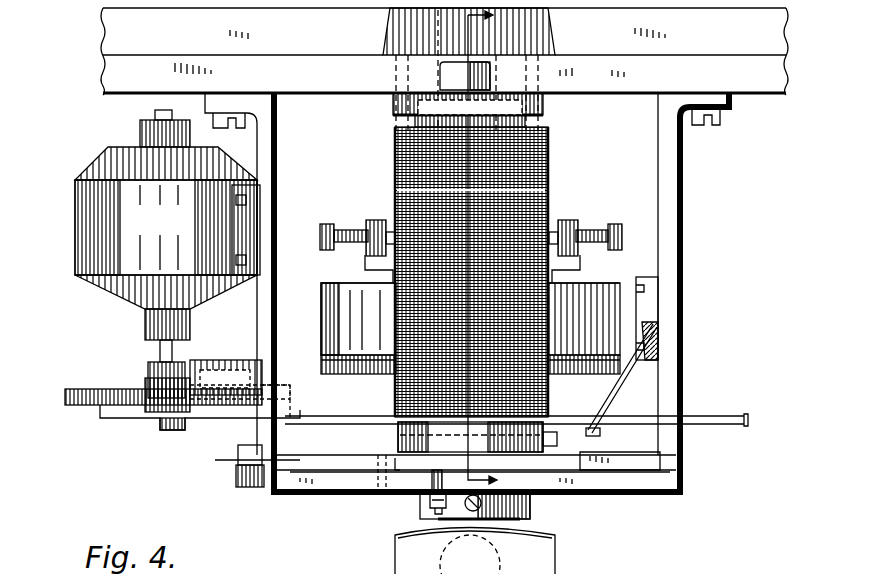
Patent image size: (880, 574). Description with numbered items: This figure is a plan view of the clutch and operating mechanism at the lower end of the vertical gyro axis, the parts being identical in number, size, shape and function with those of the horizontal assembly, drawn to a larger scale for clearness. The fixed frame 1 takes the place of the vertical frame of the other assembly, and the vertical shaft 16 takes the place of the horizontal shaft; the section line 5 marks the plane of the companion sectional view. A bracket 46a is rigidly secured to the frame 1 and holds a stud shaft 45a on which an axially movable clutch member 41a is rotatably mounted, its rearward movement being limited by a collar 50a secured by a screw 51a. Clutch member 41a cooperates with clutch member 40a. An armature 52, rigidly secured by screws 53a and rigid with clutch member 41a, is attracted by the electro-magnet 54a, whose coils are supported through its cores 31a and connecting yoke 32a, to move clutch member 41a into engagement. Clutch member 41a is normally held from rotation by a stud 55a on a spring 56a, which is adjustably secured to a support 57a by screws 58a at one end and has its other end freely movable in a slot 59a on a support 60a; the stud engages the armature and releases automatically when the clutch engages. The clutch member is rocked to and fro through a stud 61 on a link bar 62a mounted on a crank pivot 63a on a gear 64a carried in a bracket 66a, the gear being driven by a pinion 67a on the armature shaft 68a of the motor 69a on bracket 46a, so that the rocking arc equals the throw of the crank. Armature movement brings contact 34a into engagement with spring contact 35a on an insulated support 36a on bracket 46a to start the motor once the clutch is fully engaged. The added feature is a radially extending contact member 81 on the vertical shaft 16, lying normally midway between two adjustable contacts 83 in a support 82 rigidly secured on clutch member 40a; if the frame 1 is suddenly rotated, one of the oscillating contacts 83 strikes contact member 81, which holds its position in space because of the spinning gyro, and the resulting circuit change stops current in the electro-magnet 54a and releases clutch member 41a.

The fixed frame 1 is at (118, 79).
The vertical shaft 16 is at (440, 10).
The section line 5 is at (467, 249).
The connecting yoke 32a is at (395, 106).
The cores 31a is at (415, 123).
The contact member 81 is at (545, 152).
The electro-magnet 54a is at (397, 192).
The bracket 46a is at (683, 198).
The motor 69a is at (167, 236).
The armature shaft 68a is at (160, 357).
The bracket 66a is at (205, 360).
The gear 64a is at (109, 408).
The pinion 67a is at (150, 424).
The crank pivot 63a is at (200, 430).
The link bar 62a is at (310, 418).
The slot 59a is at (238, 462).
The support 60a is at (248, 488).
The clutch member 40a is at (330, 324).
The axially movable clutch member 41a is at (322, 372).
The adjustable contacts 83 is at (328, 226).
The support 82 is at (374, 222).
The insulated support 36a is at (678, 318).
The spring contact 35a is at (662, 347).
The contact 34a is at (603, 430).
The spring 56a is at (286, 460).
The stud 61 is at (398, 432).
The collar 50a is at (530, 506).
The stud 55a is at (435, 458).
The armature 52 is at (390, 458).
The screws 53a is at (423, 458).
The screw 51a is at (526, 519).
The stud shaft 45a is at (535, 532).
The screws 58a is at (658, 464).
The support 57a is at (644, 474).